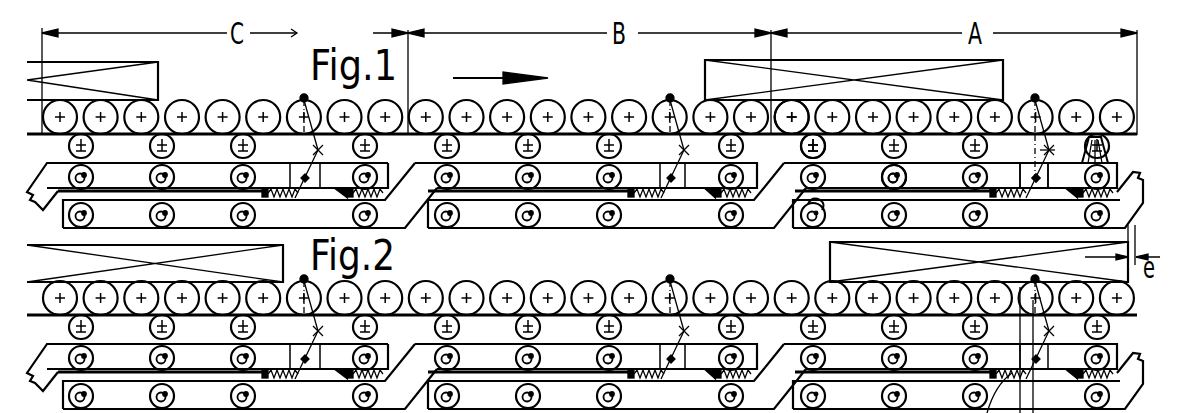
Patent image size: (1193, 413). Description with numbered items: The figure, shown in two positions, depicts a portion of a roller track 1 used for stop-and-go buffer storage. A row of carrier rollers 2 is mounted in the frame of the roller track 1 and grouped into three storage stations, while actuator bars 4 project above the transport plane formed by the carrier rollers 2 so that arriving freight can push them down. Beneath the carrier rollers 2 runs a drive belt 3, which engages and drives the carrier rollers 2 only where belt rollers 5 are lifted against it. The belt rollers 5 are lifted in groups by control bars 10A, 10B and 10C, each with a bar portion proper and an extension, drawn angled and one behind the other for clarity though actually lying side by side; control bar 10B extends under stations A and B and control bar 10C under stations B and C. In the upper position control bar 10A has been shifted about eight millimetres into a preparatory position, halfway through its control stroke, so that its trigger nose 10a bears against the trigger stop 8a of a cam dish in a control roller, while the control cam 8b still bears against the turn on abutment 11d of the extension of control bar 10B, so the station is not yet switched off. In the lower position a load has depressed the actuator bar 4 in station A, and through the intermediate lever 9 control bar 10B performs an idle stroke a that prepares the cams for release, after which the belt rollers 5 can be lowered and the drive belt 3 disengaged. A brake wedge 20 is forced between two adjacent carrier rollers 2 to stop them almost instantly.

In FIG. 1, the roller conveyor 1 is at (247, 108).
In FIG. 1, the carrier rollers 2 is at (780, 125).
In FIG. 1, the drive belt 3 is at (188, 162).
In FIG. 1, the actuator bars 4 is at (1037, 98).
In FIG. 2, the actuator bars 4 is at (668, 278).
In FIG. 1, the belt rollers 5 is at (823, 147).
In FIG. 1, the brake wedge 20 is at (1108, 147).
In FIG. 1, the control bar 10C is at (400, 231).
In FIG. 1, the control bar 10B is at (663, 230).
In FIG. 1, the control bar 10A is at (1140, 211).
In FIG. 1, the trigger nose 10a is at (832, 205).
In FIG. 1, the trigger stop 8a is at (803, 202).
In FIG. 1, the control cam 8b is at (884, 173).
In FIG. 1, the turn on abutment 11d is at (968, 223).
In FIG. 2, the intermediate lever 9 is at (1018, 334).
In FIG. 2, the idle stroke a is at (1034, 338).